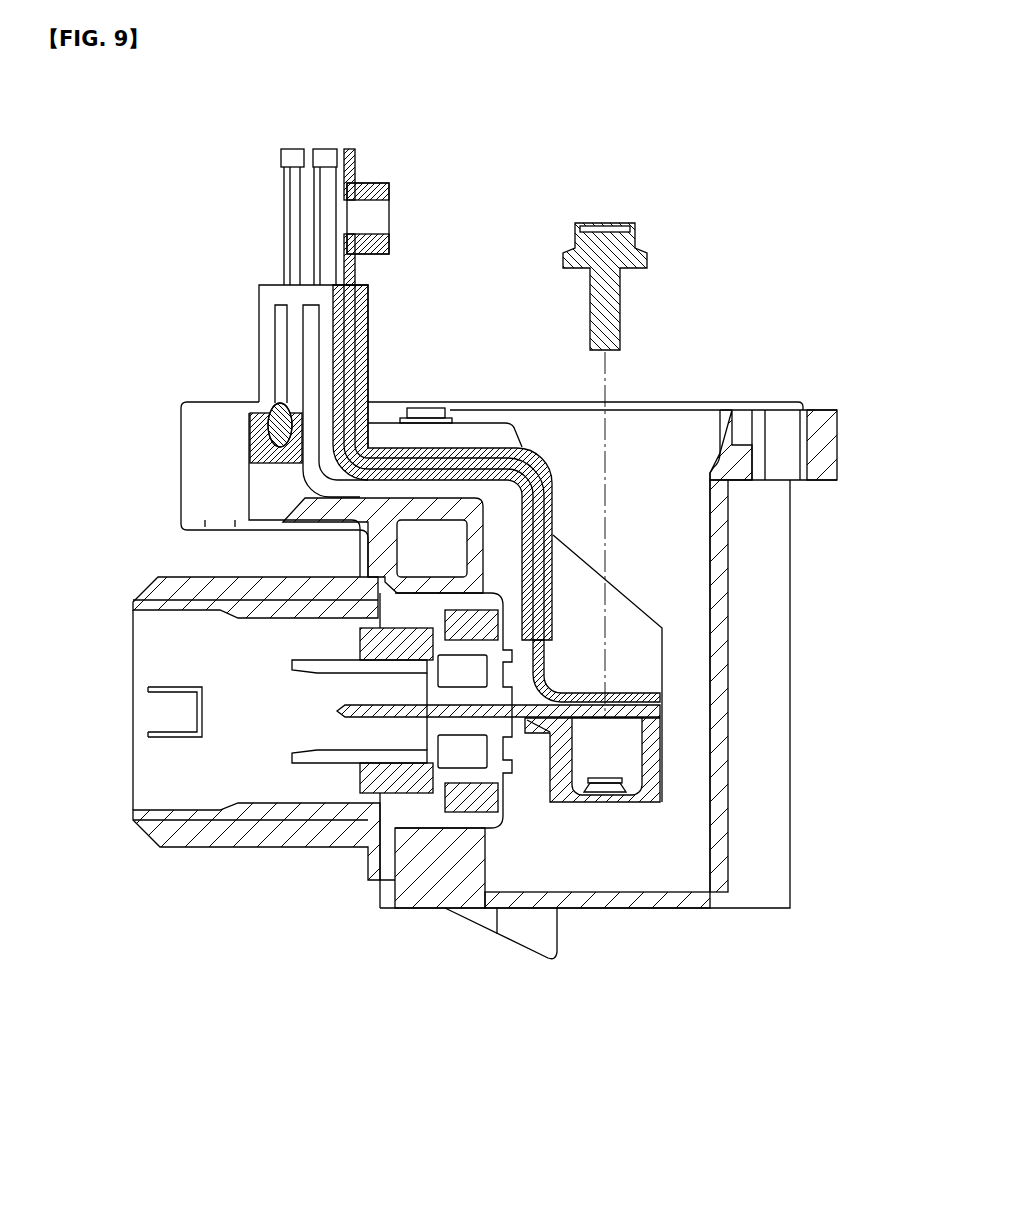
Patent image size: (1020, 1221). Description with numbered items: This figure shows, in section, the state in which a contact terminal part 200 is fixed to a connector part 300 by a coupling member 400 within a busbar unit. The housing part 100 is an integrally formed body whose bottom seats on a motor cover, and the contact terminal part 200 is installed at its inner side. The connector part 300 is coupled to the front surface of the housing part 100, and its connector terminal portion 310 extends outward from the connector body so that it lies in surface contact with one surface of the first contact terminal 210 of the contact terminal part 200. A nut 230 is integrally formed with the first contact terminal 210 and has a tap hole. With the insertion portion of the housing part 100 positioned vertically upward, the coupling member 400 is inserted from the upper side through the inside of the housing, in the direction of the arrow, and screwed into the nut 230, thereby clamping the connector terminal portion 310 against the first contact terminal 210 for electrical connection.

The housing part 100 is at (693, 932).
The contact terminal part 200 is at (378, 328).
The first contact terminal 210 is at (357, 158).
The nut 230 is at (660, 772).
The connector part 300 is at (220, 862).
The connector terminal portion 310 is at (518, 717).
The coupling member 400 is at (656, 226).